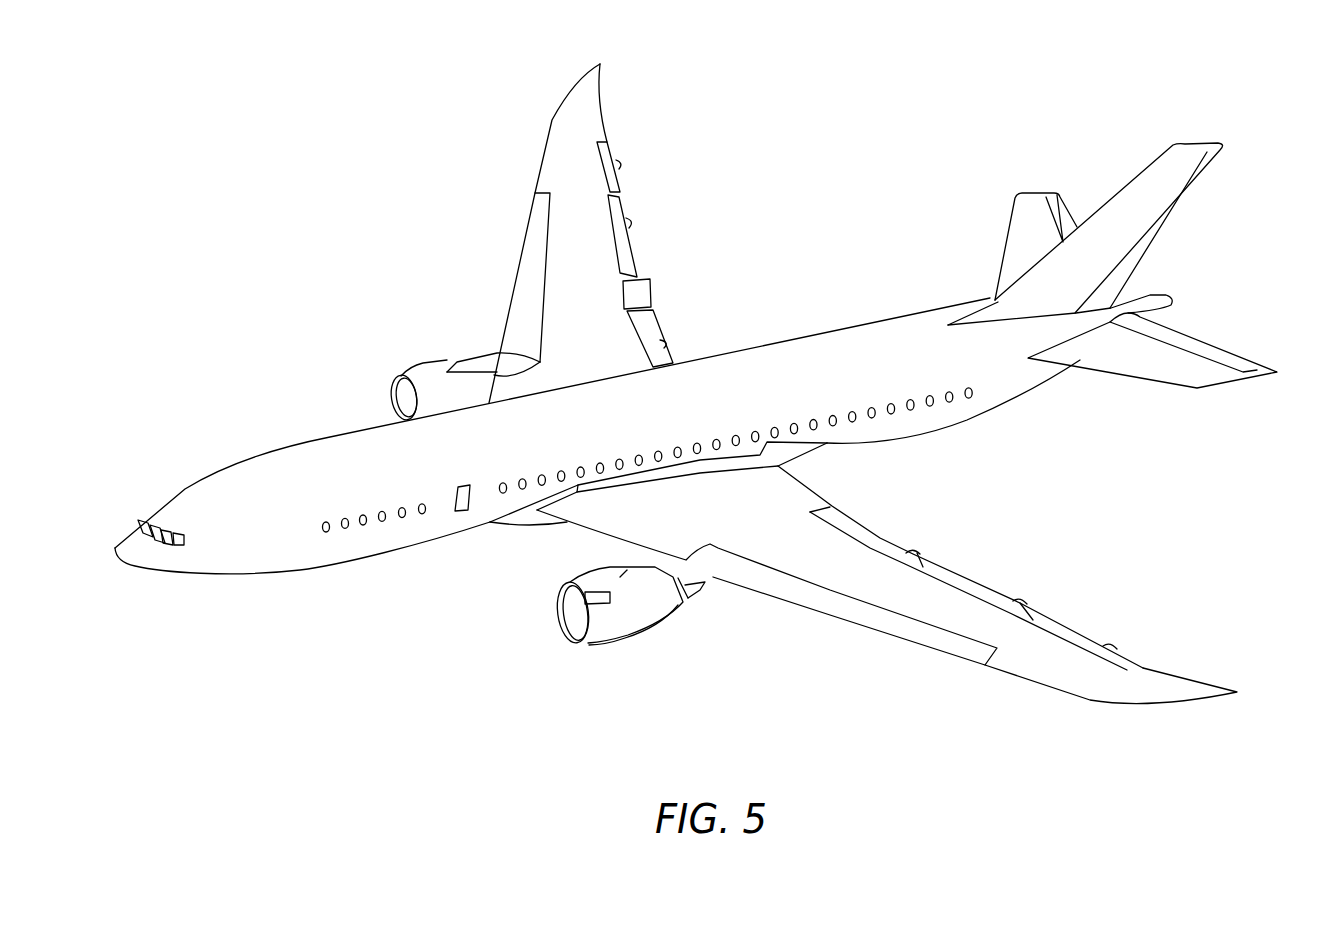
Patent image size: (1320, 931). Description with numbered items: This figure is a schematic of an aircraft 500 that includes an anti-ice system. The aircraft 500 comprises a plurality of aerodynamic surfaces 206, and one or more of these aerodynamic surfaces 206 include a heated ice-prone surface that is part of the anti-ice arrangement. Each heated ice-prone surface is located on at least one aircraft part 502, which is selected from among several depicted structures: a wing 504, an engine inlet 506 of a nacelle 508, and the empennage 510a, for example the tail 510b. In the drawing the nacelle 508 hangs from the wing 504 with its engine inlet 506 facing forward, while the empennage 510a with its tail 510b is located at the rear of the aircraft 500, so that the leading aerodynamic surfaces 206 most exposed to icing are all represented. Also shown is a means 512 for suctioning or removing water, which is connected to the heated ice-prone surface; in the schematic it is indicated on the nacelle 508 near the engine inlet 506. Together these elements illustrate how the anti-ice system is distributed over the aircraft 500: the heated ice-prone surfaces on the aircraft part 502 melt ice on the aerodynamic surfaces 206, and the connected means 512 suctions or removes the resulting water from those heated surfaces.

The aircraft 500 is at (283, 411).
The aircraft part 502 is at (540, 598).
The wing 504 is at (1156, 672).
The engine inlet 506 is at (542, 625).
The nacelle 508 is at (636, 634).
The empennage 510a is at (1222, 113).
The tail 510b is at (1169, 163).
The means for suctioning or removing water 512 is at (592, 592).
The aerodynamic surfaces 206 is at (758, 556).